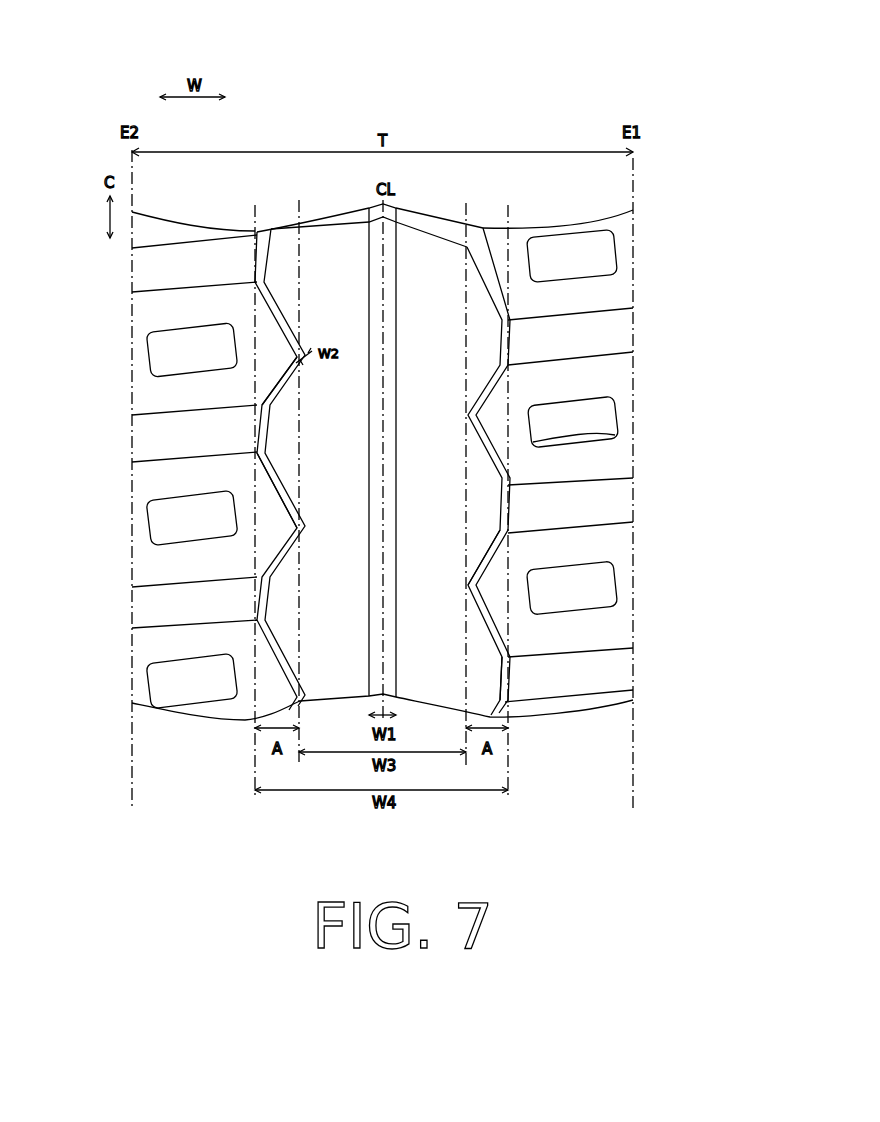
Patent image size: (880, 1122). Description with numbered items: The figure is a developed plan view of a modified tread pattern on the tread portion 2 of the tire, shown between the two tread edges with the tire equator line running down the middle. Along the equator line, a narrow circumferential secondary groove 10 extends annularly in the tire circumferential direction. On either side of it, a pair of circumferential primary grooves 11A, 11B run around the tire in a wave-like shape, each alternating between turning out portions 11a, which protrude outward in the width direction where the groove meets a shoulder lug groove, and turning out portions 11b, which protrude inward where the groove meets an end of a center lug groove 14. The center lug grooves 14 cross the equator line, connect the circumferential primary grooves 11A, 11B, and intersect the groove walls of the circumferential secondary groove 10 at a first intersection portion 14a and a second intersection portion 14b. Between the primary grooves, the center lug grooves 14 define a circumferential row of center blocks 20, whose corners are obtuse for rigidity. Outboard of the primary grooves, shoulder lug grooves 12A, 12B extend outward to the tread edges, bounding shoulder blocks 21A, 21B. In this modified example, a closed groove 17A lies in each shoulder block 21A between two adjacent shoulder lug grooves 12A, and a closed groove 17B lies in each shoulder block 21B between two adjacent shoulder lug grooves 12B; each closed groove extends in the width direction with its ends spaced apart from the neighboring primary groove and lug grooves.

The tread portion 2 is at (686, 64).
The center block 20 is at (430, 252).
The circumferential secondary groove 10 is at (387, 470).
The circumferential primary groove 11A is at (480, 377).
The circumferential primary groove 11B is at (274, 385).
The turning out portion 11a is at (257, 437).
The turning out portion 11b is at (297, 525).
The shoulder lug groove 12A is at (597, 332).
The shoulder lug groove 12B is at (155, 613).
The center lug groove 14 is at (470, 232).
The first intersection portion 14a is at (533, 442).
The second intersection portion 14b is at (473, 407).
The closed groove 17A is at (598, 567).
The closed groove 17B is at (162, 518).
The shoulder block 21A is at (622, 383).
The shoulder block 21B is at (170, 318).